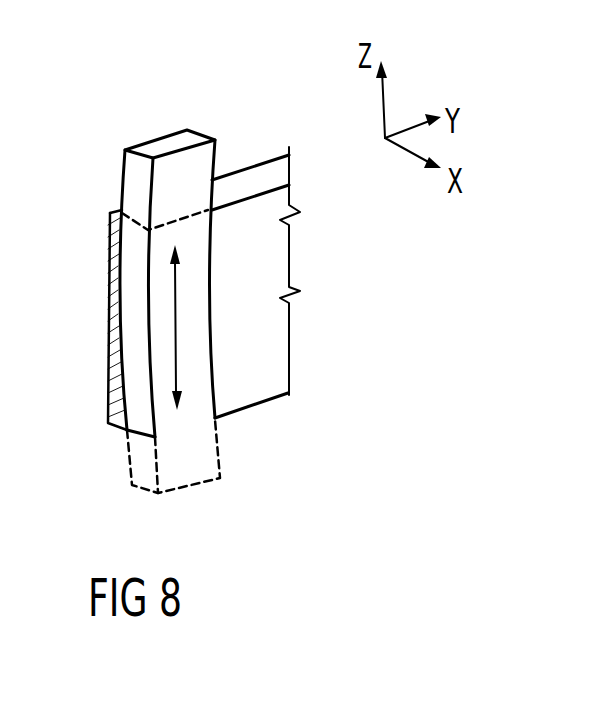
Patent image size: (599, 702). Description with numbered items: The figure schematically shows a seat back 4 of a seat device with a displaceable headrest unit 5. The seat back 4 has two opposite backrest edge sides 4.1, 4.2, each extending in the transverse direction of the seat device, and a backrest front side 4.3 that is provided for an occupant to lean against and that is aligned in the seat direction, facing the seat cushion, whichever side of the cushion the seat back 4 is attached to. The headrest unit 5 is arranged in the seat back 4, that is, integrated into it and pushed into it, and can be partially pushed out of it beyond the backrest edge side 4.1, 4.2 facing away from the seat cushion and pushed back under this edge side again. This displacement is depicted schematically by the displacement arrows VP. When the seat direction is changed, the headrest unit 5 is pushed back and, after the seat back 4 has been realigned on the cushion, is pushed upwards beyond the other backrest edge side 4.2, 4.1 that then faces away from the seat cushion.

The seat back 4 is at (318, 270).
The backrest edge side 4.1 is at (260, 177).
The backrest edge side 4.2 is at (265, 407).
The backrest front side 4.3 is at (275, 247).
The headrest unit 5 is at (130, 338).
The displacement arrows VP is at (175, 283).